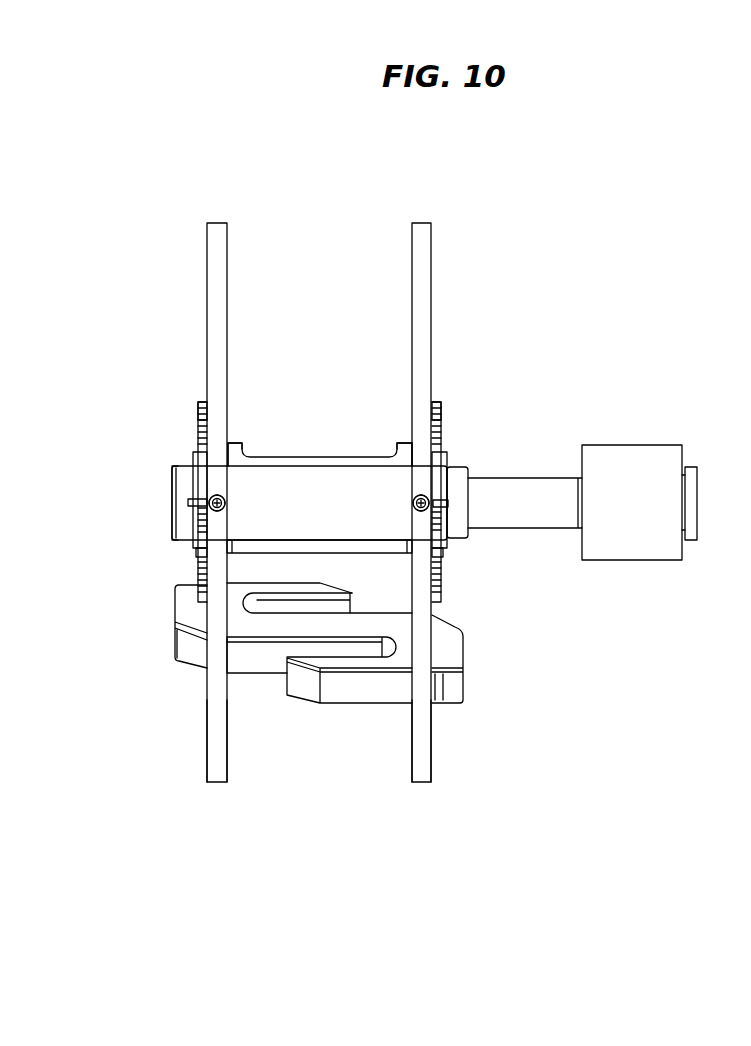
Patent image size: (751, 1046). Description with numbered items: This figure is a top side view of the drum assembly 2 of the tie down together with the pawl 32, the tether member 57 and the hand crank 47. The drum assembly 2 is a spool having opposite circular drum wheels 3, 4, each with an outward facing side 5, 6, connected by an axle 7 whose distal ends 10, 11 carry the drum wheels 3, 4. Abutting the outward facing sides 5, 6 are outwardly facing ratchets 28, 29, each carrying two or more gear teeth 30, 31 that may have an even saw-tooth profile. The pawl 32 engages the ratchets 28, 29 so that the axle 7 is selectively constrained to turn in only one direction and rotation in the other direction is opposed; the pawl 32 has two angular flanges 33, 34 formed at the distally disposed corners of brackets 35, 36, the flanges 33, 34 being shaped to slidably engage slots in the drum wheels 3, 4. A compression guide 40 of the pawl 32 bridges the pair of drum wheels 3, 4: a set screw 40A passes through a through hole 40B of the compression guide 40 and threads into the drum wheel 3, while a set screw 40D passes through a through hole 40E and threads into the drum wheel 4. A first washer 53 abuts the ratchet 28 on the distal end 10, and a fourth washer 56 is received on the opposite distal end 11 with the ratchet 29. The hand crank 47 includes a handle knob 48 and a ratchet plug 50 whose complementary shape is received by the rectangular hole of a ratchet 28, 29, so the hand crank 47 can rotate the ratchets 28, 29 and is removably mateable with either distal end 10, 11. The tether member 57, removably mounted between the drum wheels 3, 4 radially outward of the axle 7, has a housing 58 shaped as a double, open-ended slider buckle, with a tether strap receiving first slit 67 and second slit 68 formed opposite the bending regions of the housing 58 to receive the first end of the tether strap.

The drum assembly 2 is at (582, 214).
The drum wheel 3 is at (418, 782).
The drum wheel 4 is at (214, 782).
The outward facing side 5 is at (432, 240).
The outward facing side 6 is at (207, 240).
The axle 7 is at (333, 457).
The distal end 10 is at (468, 500).
The distal end 11 is at (172, 503).
The ratchet 28 is at (443, 441).
The ratchet 29 is at (200, 420).
The gear teeth 30 is at (441, 420).
The gear teeth 31 is at (203, 406).
The pawl 32 is at (465, 570).
The angular flange 33 is at (450, 482).
The angular flange 34 is at (193, 501).
The bracket 35 is at (402, 443).
The bracket 36 is at (240, 443).
The compression guide 40 is at (302, 516).
The set screw 40A is at (414, 500).
The through hole 40B is at (412, 508).
The set screw 40D is at (224, 500).
The through hole 40E is at (226, 508).
The hand crank 47 is at (588, 374).
The handle knob 48 is at (621, 515).
The ratchet plug 50 is at (503, 532).
The first washer 53 is at (447, 463).
The fourth washer 56 is at (195, 458).
The tether member 57 is at (168, 696).
The housing 58 is at (463, 655).
The tether strap receiving first slit 67 is at (297, 650).
The tether strap receiving second slit 68 is at (337, 607).